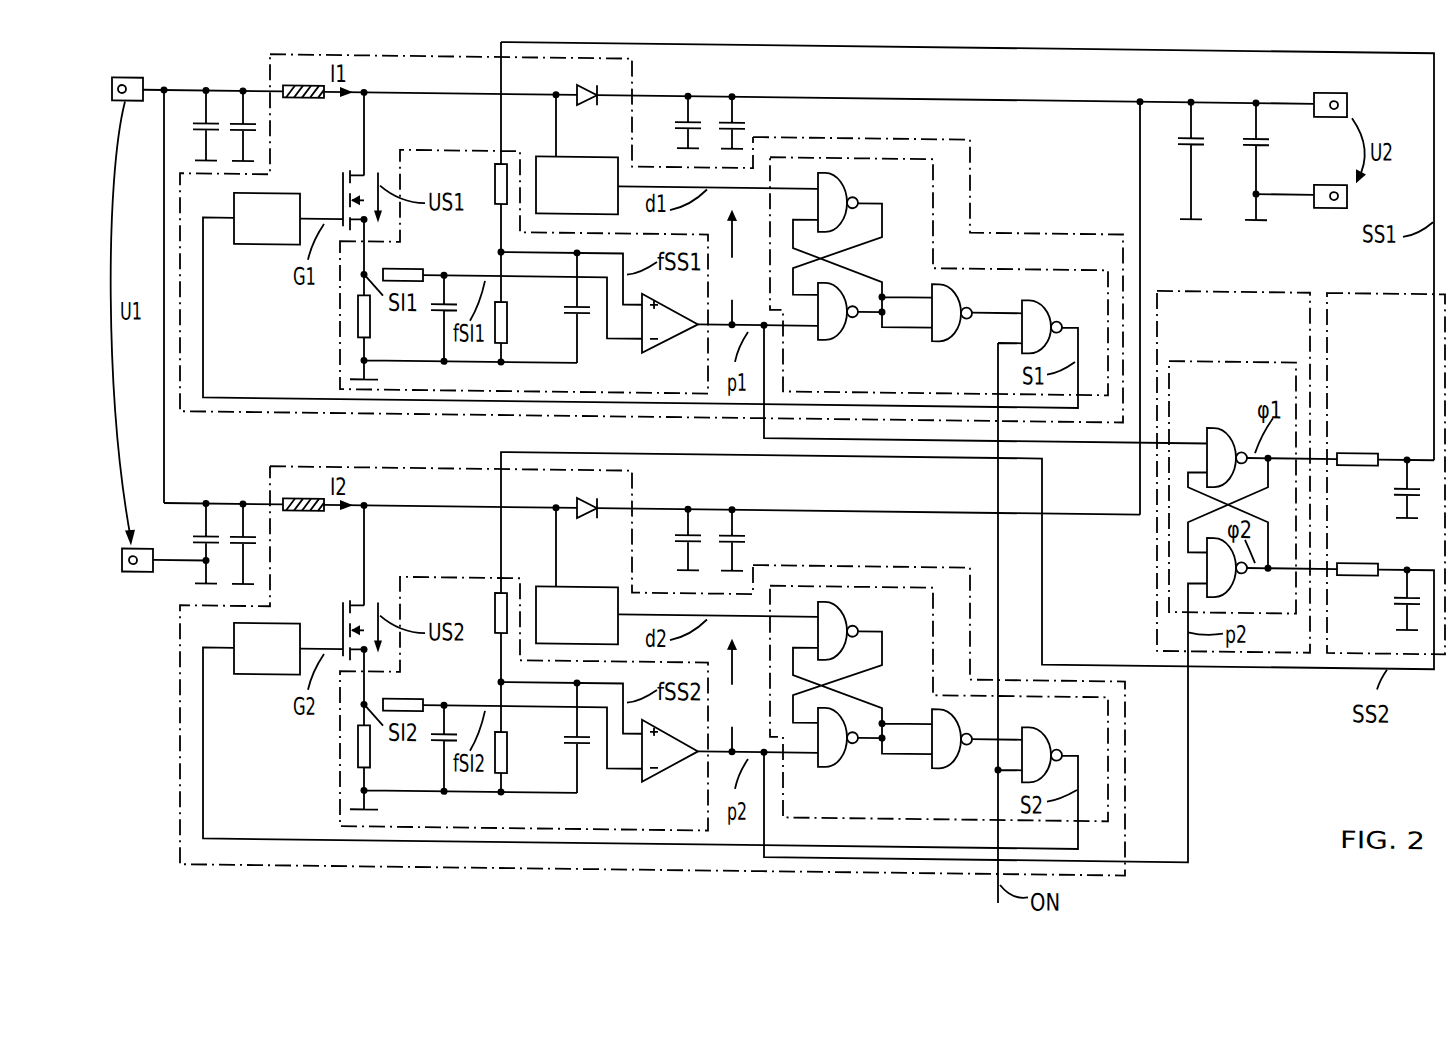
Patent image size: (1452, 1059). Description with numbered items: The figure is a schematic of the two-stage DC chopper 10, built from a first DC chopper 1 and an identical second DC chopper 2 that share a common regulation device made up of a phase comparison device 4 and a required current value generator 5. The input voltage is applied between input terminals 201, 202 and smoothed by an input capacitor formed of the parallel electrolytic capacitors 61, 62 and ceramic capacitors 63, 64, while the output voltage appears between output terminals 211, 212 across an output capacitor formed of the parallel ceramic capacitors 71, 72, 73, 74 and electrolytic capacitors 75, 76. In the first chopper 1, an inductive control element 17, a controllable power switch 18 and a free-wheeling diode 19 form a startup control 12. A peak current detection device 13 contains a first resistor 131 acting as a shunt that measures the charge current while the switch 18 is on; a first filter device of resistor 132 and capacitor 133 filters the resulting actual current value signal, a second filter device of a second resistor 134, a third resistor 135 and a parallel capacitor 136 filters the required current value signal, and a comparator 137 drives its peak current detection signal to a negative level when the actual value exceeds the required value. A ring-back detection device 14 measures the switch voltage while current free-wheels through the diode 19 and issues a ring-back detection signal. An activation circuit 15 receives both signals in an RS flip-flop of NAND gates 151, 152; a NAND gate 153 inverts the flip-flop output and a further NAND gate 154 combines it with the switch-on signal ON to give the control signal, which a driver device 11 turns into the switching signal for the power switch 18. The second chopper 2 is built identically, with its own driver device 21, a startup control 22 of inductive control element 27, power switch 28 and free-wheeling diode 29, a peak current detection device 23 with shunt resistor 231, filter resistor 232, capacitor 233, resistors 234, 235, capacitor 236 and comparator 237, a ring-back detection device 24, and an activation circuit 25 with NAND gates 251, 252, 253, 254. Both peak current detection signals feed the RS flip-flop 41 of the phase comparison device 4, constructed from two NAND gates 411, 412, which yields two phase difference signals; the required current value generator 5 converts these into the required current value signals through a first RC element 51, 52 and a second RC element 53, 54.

The first DC chopper 1 is at (634, 73).
The second DC chopper 2 is at (634, 497).
The phase comparison device 4 is at (1297, 315).
The required current value generator 5 is at (1346, 315).
The two-stage DC chopper 10 is at (1210, 726).
The driver device 11 is at (278, 230).
The startup control 12 is at (380, 135).
The peak current detection device 13 is at (340, 367).
The ring-back detection device 14 is at (589, 192).
The activation circuit 15 is at (815, 373).
The inductive control element 17 is at (308, 98).
The controllable power switch 18 is at (338, 178).
The free-wheeling diode 19 is at (599, 97).
The second gate driver 21 is at (278, 660).
The second switching unit 22 is at (380, 550).
The second current sensing unit 23 is at (340, 797).
The second voltage detector 24 is at (589, 622).
The second logic unit 25 is at (815, 803).
The second current sense resistor 27 is at (308, 510).
The second MOSFET switch 28 is at (338, 608).
The second diode 29 is at (599, 513).
The first RS flip-flop 41 is at (1199, 379).
The first RC element 51 is at (1362, 439).
The first RC element 52 is at (1398, 481).
The second RC element 53 is at (1358, 553).
The second RC element 54 is at (1397, 590).
The electrolytic capacitor 61 is at (198, 120).
The electrolytic capacitor 62 is at (236, 120).
The input capacitor 63 is at (198, 533).
The ceramic capacitor 64 is at (236, 533).
The ceramic capacitor 71 is at (697, 104).
The ceramic capacitor 72 is at (740, 104).
The ceramic capacitor 73 is at (697, 517).
The ceramic capacitor 74 is at (740, 517).
The electrolytic capacitor 75 is at (1183, 135).
The electrolytic capacitor 76 is at (1248, 135).
The first resistor 131 is at (358, 314).
The resistor 132 is at (409, 265).
The capacitor 133 is at (437, 307).
The second resistor 134 is at (495, 180).
The third resistor 135 is at (507, 319).
The capacitor 136 is at (585, 315).
The comparator 137 is at (670, 319).
The NAND gate 151 is at (833, 184).
The NAND gate 152 is at (825, 320).
The NAND gate 153 is at (942, 315).
The further NAND gate 154 is at (1032, 302).
The input terminal 201 is at (125, 100).
The input terminal 202 is at (135, 570).
The output terminal 211 is at (1333, 99).
The output terminal 212 is at (1332, 190).
The resistor 231 is at (358, 745).
The resistor 232 is at (409, 695).
The capacitor 233 is at (437, 737).
The resistor 234 is at (495, 610).
The resistor 235 is at (507, 749).
The capacitor 236 is at (585, 745).
The comparator 237 is at (670, 749).
The NAND gate 251 is at (833, 612).
The NAND gate 252 is at (825, 748).
The NAND gate 253 is at (942, 743).
The NAND gate 254 is at (1030, 728).
The NAND gate 411 is at (1218, 416).
The NAND gate 412 is at (1217, 567).